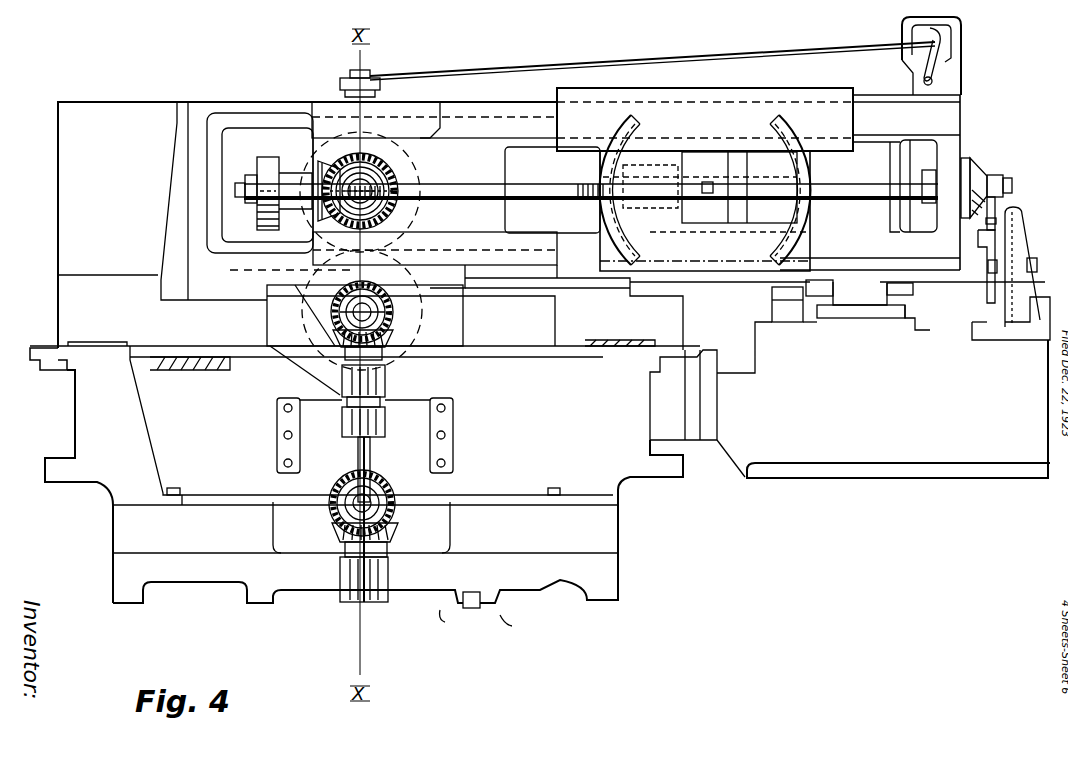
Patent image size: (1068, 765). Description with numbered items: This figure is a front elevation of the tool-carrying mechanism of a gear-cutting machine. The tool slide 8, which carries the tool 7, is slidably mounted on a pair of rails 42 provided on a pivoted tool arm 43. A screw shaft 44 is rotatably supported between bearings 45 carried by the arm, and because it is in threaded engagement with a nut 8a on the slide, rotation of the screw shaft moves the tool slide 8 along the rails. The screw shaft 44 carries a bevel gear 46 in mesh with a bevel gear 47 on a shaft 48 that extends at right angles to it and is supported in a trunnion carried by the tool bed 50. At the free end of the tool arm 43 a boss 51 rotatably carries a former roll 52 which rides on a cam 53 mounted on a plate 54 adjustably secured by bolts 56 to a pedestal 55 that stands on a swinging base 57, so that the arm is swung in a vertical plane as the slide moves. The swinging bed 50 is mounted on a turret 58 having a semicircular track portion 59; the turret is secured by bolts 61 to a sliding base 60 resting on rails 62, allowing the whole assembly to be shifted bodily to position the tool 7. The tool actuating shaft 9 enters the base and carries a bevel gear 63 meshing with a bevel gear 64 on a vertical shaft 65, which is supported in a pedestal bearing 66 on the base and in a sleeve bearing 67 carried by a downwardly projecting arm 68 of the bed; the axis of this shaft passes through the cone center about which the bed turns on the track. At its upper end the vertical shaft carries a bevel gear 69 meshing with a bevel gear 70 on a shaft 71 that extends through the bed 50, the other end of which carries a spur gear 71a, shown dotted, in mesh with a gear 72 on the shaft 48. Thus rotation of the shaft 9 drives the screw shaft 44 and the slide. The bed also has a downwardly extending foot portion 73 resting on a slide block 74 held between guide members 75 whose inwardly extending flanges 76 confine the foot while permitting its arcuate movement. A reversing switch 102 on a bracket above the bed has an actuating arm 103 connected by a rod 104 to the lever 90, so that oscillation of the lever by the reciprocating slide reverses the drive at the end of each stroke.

The tool 7 is at (705, 181).
The tool slide 8 is at (730, 110).
The nut 8a is at (620, 198).
The tool actuating shaft 9 is at (345, 515).
The rails 42 is at (508, 226).
The tool arm 43 is at (230, 166).
The screw shaft 44 is at (460, 184).
The bearings 45 is at (268, 168).
The bevel gear 46 is at (325, 172).
The bevel gear 47 is at (380, 205).
The shaft 48 is at (375, 222).
The tool bed 50 is at (85, 220).
The boss 51 is at (978, 170).
The former roll 52 is at (1000, 176).
The cam 53 is at (996, 206).
The plate 54 is at (1000, 240).
The pedestal 55 is at (1022, 318).
The bolts 56 is at (985, 278).
The swinging base 57 is at (900, 465).
The turret 58 is at (132, 456).
The semicircular track portion 59 is at (100, 355).
The sliding base 60 is at (123, 578).
The bolts 61 is at (174, 488).
The rails 62 is at (472, 608).
The bevel gear 63 is at (335, 512).
The bevel gear 64 is at (395, 527).
The vertical shaft 65 is at (340, 475).
The pedestal bearing 66 is at (375, 600).
The sleeve bearing 67 is at (340, 385).
The downwardly projecting arm 68 is at (412, 365).
The bevel gear 69 is at (335, 338).
The bevel gear 70 is at (395, 311).
The shaft 71 is at (345, 311).
The spur gear 71a is at (271, 266).
The gear 72 is at (385, 140).
The foot portion 73 is at (843, 292).
The slide block 74 is at (852, 320).
The guide members 75 is at (772, 305).
The flanges 76 is at (806, 290).
The lever 90 is at (342, 80).
The reversing switch 102 is at (918, 31).
The actuating arm 103 is at (945, 50).
The rod 104 is at (640, 60).